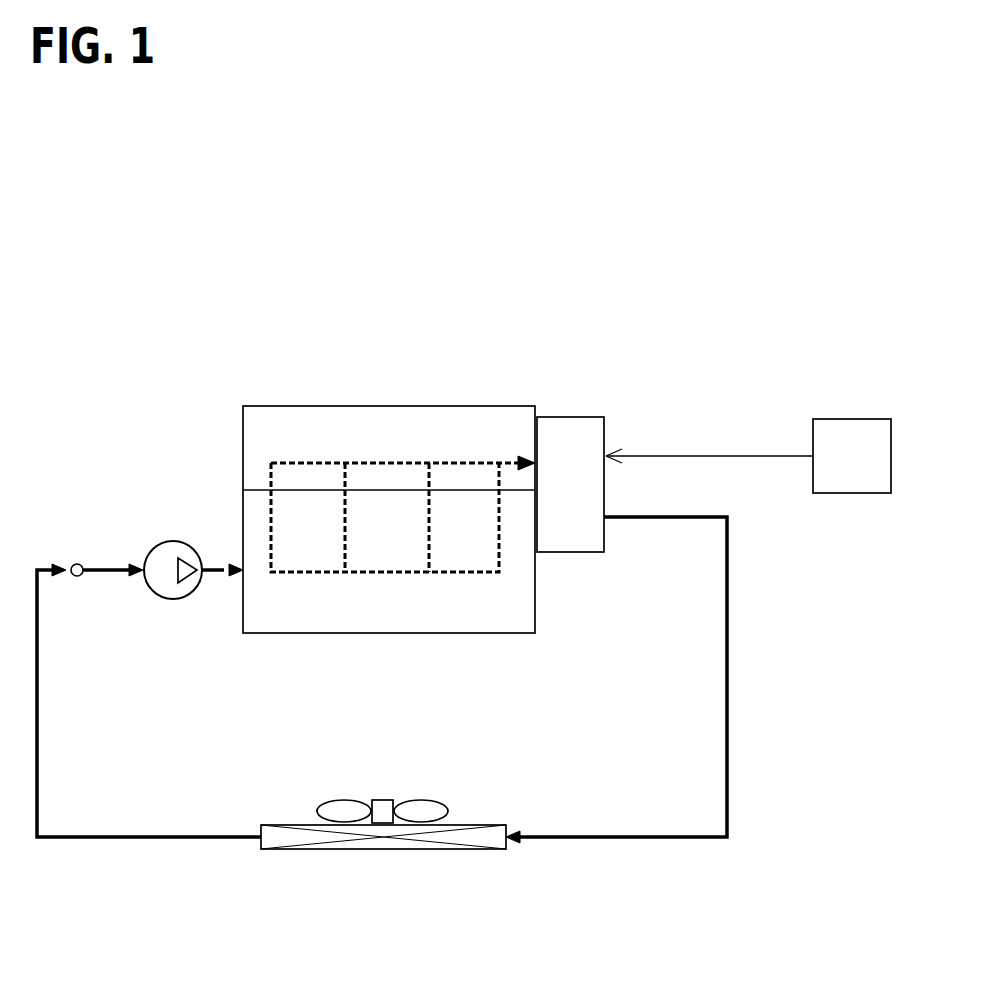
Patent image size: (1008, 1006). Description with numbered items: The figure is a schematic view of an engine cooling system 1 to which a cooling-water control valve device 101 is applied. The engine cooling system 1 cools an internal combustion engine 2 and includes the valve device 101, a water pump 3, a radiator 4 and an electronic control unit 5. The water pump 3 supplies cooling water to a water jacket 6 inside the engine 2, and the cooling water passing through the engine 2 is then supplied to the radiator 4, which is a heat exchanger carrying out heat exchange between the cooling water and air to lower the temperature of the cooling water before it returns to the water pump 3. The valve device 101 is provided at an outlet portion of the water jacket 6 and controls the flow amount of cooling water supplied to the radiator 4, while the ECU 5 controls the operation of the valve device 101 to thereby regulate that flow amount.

The engine cooling system 1 is at (716, 278).
The internal combustion engine 2 is at (264, 405).
The water pump 3 is at (173, 541).
The radiator 4 is at (283, 822).
The electronic control unit 5 is at (840, 418).
The water jacket 6 is at (398, 460).
The cooling-water control valve device 101 is at (580, 415).